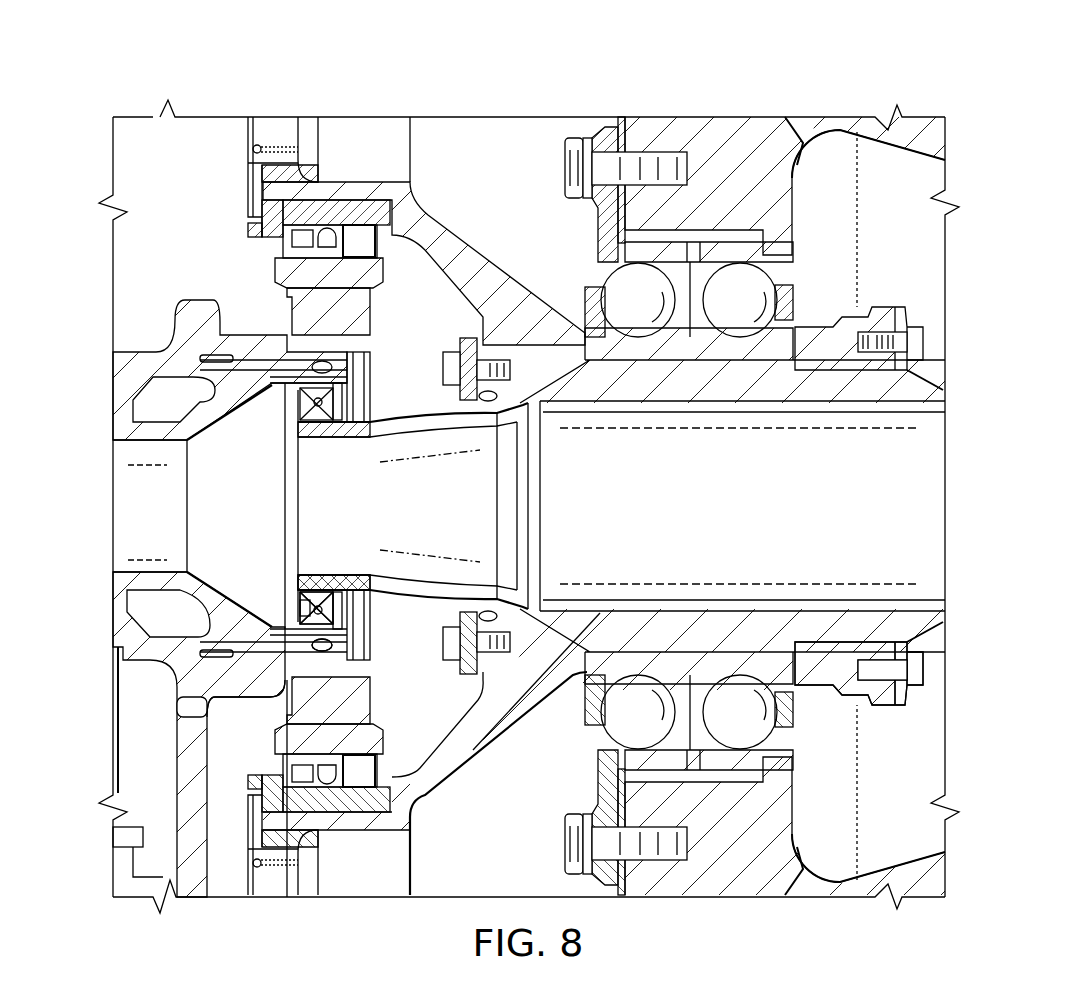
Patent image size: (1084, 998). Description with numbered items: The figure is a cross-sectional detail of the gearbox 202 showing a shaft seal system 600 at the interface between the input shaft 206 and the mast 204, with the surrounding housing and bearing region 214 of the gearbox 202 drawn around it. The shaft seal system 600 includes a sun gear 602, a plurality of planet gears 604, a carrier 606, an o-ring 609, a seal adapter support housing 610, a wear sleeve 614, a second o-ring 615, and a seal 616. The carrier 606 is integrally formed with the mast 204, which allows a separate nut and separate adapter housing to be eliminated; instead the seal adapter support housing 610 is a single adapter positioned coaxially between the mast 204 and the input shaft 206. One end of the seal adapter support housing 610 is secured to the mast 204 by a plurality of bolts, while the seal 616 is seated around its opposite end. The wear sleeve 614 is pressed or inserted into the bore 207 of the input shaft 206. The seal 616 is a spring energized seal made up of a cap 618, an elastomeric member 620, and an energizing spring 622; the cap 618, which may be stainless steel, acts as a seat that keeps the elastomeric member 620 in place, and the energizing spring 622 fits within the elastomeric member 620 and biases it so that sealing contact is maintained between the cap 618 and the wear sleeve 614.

The gearbox 202 is at (785, 212).
The mast 204 is at (923, 617).
The input shaft 206 is at (135, 425).
The bore 207 is at (275, 652).
The bearing assembly 214 is at (319, 187).
The shaft seal system 600 is at (732, 417).
The sun gear 602 is at (328, 311).
The planet gears 604 is at (329, 273).
The carrier 606 is at (473, 264).
The o-ring 609 is at (413, 454).
The seal adapter support housing 610 is at (476, 369).
The wear sleeve 614 is at (316, 404).
The o-ring 615 is at (398, 621).
The seal 616 is at (310, 560).
The cap 618 is at (337, 401).
The elastomeric member 620 is at (300, 597).
The energizing spring 622 is at (330, 597).